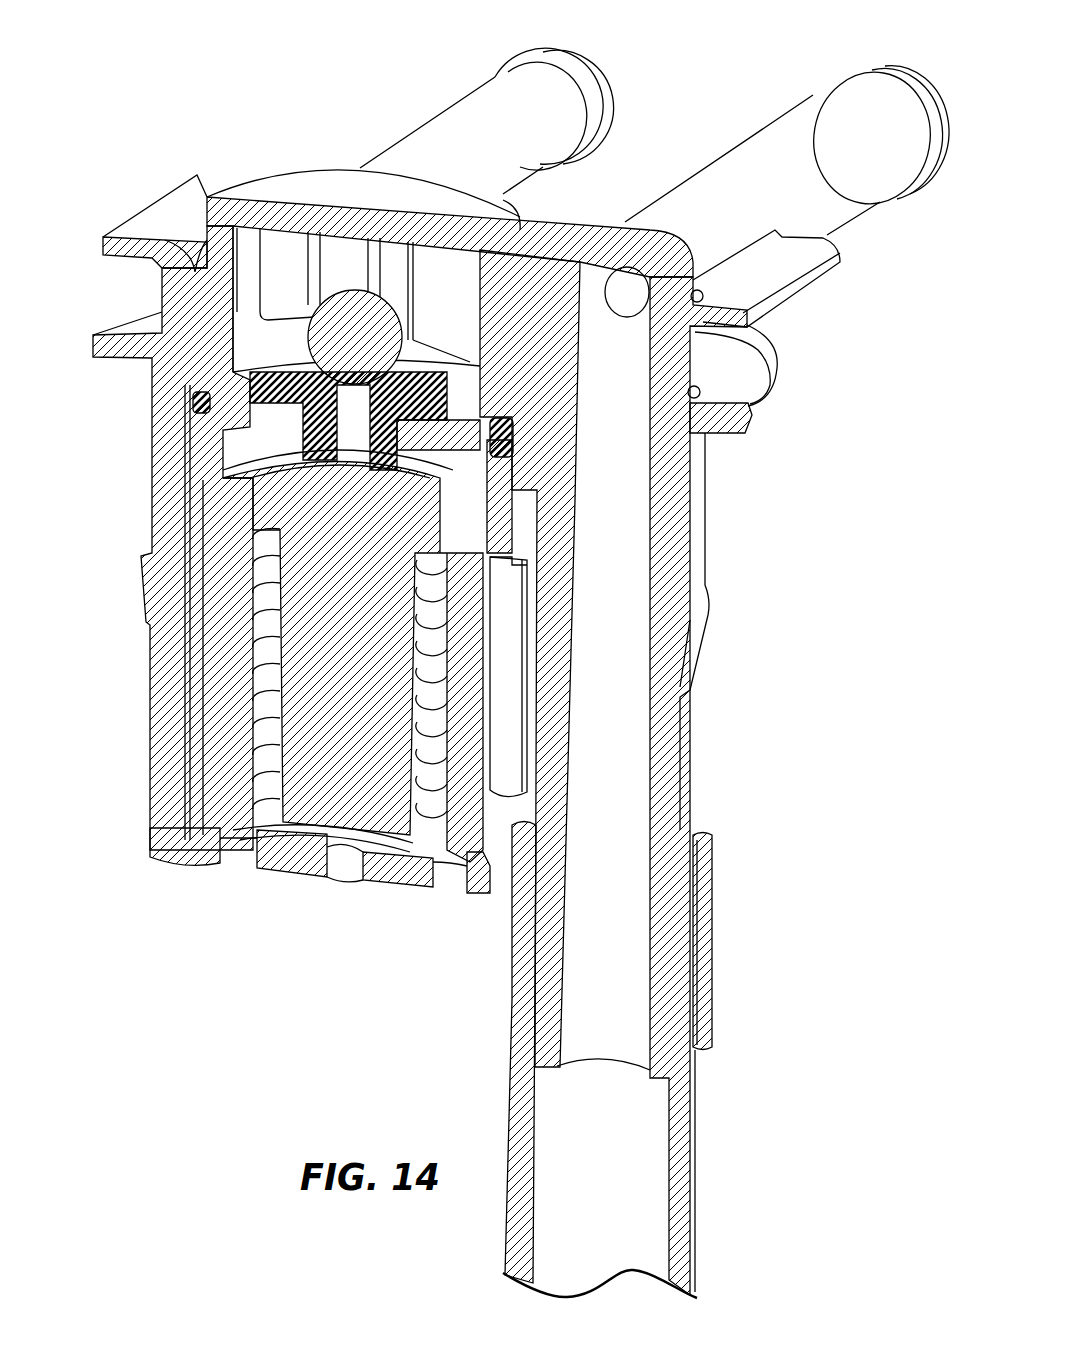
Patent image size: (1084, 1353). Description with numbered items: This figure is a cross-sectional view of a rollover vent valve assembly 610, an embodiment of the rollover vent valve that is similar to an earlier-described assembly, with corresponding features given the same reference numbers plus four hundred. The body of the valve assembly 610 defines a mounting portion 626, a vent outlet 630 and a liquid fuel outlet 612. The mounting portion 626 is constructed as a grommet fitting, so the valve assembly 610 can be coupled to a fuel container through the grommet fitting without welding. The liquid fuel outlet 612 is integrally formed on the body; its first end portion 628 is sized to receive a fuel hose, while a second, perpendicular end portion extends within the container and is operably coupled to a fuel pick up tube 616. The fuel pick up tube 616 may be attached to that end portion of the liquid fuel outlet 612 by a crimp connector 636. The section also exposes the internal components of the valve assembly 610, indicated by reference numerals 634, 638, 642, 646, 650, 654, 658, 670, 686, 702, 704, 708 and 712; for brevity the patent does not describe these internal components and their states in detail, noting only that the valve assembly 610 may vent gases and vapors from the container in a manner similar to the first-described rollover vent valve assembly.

The rollover vent valve assembly 610 is at (320, 60).
The liquid fuel outlet 612 is at (755, 155).
The fuel pick up tube 616 is at (680, 1180).
The mounting portion 626 is at (125, 215).
The first end portion 628 is at (860, 57).
The vent outlet 630 is at (527, 75).
The housing 634 is at (193, 523).
The crimp connector 636 is at (712, 985).
The sleeve 638 is at (217, 623).
The end cap 642 is at (196, 857).
The seal 646 is at (232, 405).
The seal 650 is at (478, 460).
The chamber 654 is at (465, 301).
The opening 658 is at (330, 890).
The passage 670 is at (464, 399).
The diaphragm 686 is at (410, 462).
The ball 702 is at (355, 310).
The valve seat 704 is at (357, 470).
The piston 708 is at (252, 664).
The spring 712 is at (268, 725).